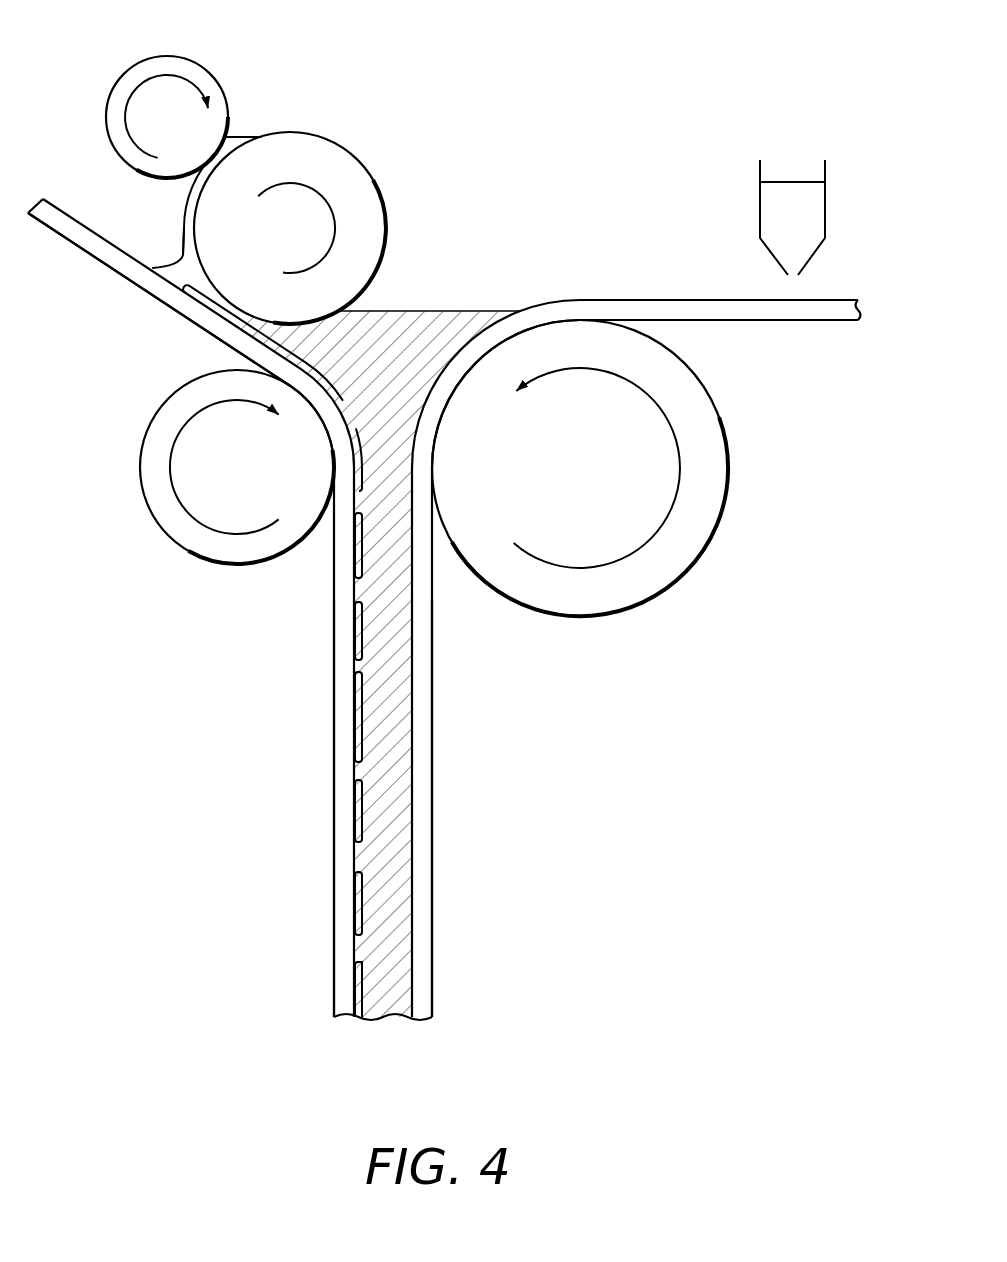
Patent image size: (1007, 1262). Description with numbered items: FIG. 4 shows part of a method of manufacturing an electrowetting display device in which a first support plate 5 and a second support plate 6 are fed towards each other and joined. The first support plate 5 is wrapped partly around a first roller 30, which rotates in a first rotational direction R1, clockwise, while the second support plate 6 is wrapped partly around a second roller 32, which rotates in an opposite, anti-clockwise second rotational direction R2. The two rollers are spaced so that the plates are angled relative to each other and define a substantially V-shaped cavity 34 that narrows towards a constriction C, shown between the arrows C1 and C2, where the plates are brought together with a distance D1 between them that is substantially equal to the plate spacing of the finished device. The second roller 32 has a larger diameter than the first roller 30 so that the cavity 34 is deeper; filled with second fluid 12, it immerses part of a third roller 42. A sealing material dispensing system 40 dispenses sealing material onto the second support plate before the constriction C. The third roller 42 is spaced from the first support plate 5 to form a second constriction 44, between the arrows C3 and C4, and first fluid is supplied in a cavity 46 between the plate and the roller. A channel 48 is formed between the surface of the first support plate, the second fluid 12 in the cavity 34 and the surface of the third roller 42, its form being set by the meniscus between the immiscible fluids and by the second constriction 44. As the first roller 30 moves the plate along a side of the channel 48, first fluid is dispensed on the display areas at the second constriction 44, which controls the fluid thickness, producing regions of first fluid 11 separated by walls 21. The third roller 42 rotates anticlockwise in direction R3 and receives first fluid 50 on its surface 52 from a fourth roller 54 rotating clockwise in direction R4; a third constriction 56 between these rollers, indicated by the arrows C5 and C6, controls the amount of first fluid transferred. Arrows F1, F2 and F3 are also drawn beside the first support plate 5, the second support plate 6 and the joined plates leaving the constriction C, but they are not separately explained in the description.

The first support plate 5 is at (340, 794).
The second layer 6 is at (430, 794).
The regions of first fluid 11 is at (356, 658).
The second fluid 12 is at (464, 330).
The walls 21 is at (358, 863).
The first roller 30 is at (237, 500).
The second roller 32 is at (580, 501).
The cavity 34 is at (400, 342).
The sealing material dispensing system 40 is at (760, 172).
The third roller 42 is at (312, 210).
The second constriction 44 is at (185, 303).
The cavity 46 is at (143, 287).
The channel 48 is at (197, 330).
The first fluid 50 is at (192, 197).
The surface 52 is at (183, 228).
The fourth roller 54 is at (146, 89).
The third constriction 56 is at (236, 137).
The constriction C is at (395, 479).
The distance D1 is at (357, 590).
The first rotational direction R1 is at (197, 415).
The second rotational direction R2 is at (662, 417).
The rotational direction R3 is at (337, 197).
The rotational direction R4 is at (133, 85).
The arrow C1 is at (330, 467).
The arrow C2 is at (442, 468).
The arrow C3 is at (219, 318).
The arrow C4 is at (238, 296).
The arrow C5 is at (247, 217).
The arrow C6 is at (202, 153).
The feed direction of web F1 is at (68, 262).
The feed direction of web F2 is at (797, 338).
The feed direction of laminate F3 is at (383, 1038).